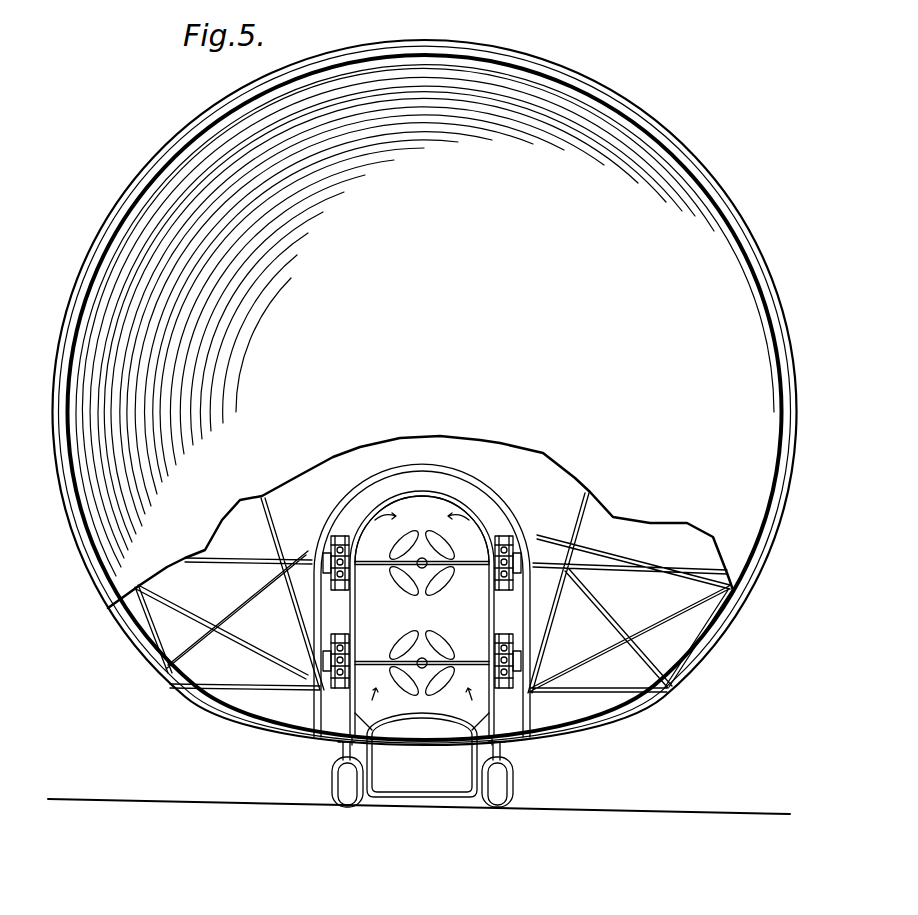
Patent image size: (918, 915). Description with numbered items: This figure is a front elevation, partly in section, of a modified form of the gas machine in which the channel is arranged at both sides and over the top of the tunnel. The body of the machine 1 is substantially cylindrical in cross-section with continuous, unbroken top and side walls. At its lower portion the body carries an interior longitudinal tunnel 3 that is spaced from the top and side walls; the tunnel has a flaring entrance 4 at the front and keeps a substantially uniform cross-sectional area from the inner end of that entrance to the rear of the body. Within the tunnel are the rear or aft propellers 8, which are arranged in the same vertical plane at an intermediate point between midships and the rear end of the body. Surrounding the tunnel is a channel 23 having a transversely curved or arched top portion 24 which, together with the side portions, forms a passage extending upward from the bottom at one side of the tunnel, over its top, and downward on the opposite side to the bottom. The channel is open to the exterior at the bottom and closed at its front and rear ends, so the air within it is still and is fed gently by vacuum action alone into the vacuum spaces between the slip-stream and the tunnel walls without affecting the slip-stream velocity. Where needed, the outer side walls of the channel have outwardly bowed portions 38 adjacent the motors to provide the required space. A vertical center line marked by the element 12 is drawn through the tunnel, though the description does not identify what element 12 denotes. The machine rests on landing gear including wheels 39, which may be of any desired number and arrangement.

The body of the machine 1 is at (180, 126).
The flaring entrance 4 is at (583, 183).
The propeller casing 12 is at (422, 520).
The interior longitudinal tunnel 3 is at (422, 614).
The transversely curved or arched top portion 24 is at (422, 521).
The rear or aft propellers 8 is at (401, 582).
The outwardly bowed portions 38 is at (537, 540).
The channel 23 is at (522, 620).
The wheels 39 is at (338, 797).